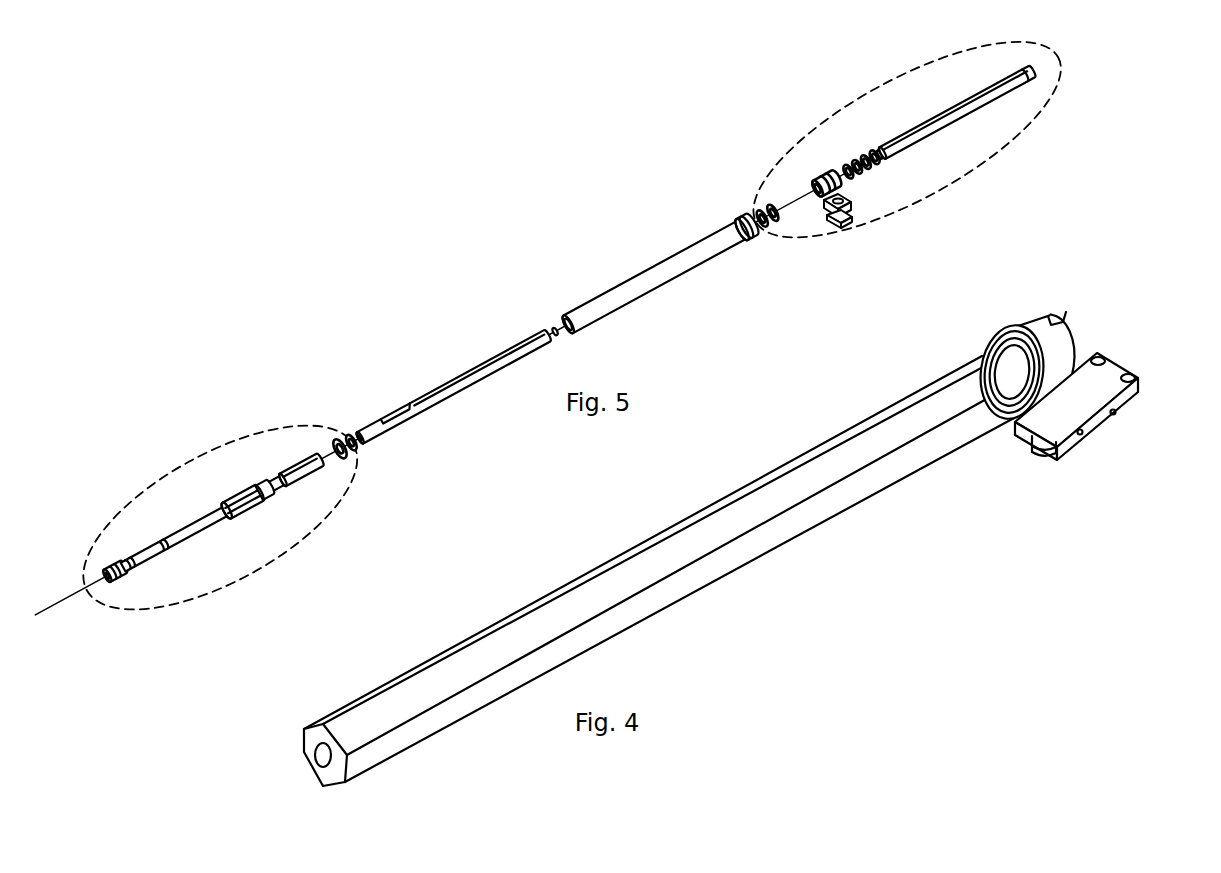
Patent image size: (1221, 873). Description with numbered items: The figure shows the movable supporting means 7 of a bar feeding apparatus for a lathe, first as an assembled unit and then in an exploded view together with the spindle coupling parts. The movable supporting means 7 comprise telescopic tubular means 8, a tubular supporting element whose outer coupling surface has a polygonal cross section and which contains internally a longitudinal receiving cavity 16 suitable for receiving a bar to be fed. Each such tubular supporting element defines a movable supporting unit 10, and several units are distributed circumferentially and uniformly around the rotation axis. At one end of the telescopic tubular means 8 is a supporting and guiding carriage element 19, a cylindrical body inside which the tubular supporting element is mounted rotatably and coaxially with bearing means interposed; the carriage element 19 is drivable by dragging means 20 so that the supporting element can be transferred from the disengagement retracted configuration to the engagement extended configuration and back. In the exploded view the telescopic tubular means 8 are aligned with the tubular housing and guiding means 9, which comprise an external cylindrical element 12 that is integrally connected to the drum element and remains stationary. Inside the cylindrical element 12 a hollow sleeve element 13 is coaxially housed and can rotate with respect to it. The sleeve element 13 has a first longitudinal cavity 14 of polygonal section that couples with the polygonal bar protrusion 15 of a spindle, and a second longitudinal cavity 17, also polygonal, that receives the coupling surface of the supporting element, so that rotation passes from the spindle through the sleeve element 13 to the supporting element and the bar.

In FIG. 4, the movable supporting means 7 is at (620, 574).
In FIG. 5, the telescopic tubular means 8 is at (948, 128).
In FIG. 4, the telescopic tubular means 8 is at (605, 583).
In FIG. 5, the tubular housing and guiding means 9 is at (476, 213).
In FIG. 4, the movable supporting unit 10 is at (693, 514).
In FIG. 5, the external cylindrical element 12 is at (625, 292).
In FIG. 5, the hollow sleeve element 13 is at (447, 383).
In FIG. 5, the first longitudinal cavity 14 is at (339, 427).
In FIG. 5, the polygonal bar protrusion 15 is at (287, 477).
In FIG. 4, the longitudinal receiving cavity 16 is at (323, 757).
In FIG. 5, the second longitudinal cavity 17 is at (545, 314).
In FIG. 5, the supporting and guiding carriage element 19 is at (819, 137).
In FIG. 4, the supporting and guiding carriage element 19 is at (1015, 325).
In FIG. 4, the dragging means 20 is at (1114, 410).